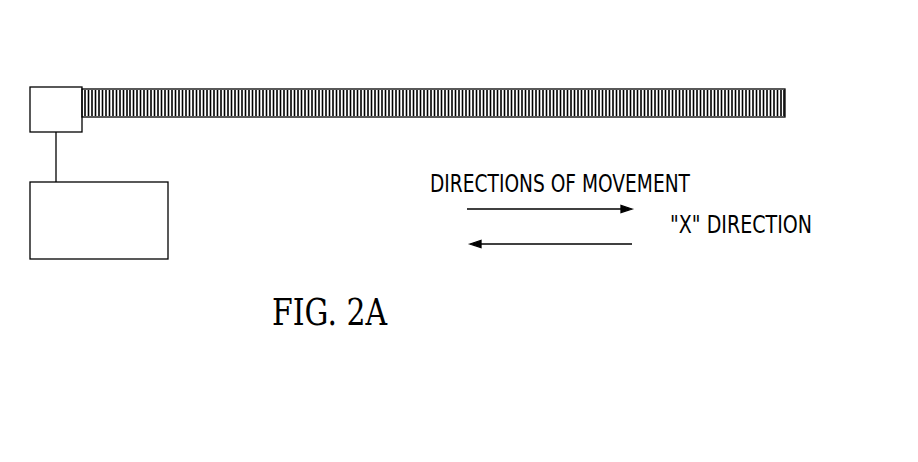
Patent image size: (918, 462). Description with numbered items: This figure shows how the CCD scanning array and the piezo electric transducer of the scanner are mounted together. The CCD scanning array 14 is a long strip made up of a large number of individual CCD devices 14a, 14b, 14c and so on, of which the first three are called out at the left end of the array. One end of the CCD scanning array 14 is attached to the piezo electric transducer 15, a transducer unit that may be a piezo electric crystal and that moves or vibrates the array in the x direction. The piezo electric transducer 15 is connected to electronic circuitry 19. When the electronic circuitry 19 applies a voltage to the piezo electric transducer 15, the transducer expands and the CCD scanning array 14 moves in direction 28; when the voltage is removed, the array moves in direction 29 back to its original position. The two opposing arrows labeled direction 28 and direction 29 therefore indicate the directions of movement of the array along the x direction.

The CCD scanning array 14 is at (561, 90).
The CCD device 14a is at (92, 88).
The CCD device 14b is at (105, 88).
The CCD device 14c is at (117, 88).
The piezo electric transducer 15 is at (48, 88).
The electronic circuitry 19 is at (99, 195).
The direction 28 is at (563, 210).
The direction 29 is at (565, 245).